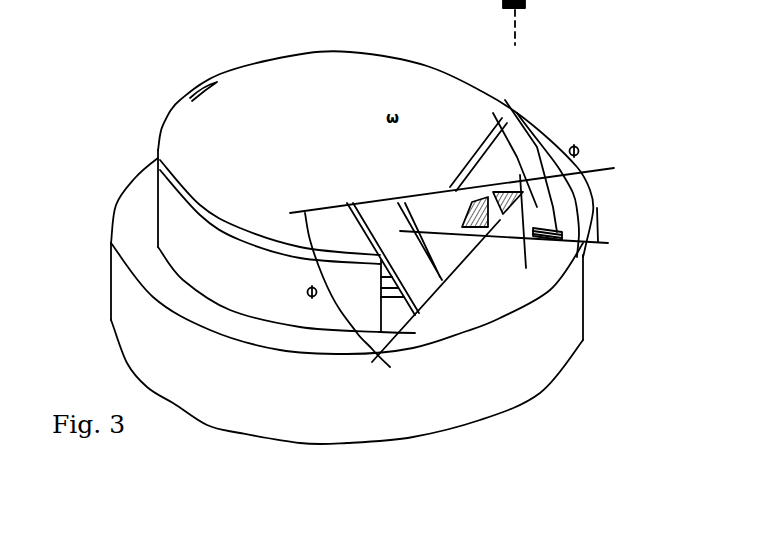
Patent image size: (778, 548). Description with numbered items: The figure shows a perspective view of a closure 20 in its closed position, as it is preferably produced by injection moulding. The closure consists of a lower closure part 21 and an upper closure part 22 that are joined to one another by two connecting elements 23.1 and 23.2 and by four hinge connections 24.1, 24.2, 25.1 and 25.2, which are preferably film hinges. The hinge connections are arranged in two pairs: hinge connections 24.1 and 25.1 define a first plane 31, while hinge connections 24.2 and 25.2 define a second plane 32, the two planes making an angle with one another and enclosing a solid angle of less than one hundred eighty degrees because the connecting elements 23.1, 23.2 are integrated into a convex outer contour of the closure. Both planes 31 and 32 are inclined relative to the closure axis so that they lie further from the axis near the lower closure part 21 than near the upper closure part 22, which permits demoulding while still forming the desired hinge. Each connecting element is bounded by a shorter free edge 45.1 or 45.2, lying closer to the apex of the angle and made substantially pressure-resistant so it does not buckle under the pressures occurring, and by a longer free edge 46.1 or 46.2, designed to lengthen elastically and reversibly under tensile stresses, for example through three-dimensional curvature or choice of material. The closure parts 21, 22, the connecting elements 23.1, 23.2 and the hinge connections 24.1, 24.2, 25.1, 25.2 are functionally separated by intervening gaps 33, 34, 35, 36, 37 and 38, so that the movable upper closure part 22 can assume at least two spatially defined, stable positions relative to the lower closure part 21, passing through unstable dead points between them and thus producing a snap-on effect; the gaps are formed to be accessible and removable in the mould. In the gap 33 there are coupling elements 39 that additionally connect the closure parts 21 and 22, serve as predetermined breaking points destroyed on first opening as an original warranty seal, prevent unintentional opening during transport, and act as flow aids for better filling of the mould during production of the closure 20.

The closure 20 is at (115, 56).
The lower closure part 21 is at (347, 301).
The upper closure part 22 is at (375, 192).
The first connecting element 23.1 is at (456, 278).
The second connecting element 23.2 is at (537, 207).
The first hinge connection 24.1 is at (428, 308).
The second hinge connection 24.2 is at (572, 242).
The third hinge connection 25.1 is at (380, 203).
The fourth hinge connection 25.2 is at (493, 125).
The first plane 31 is at (463, 217).
The second plane 32 is at (627, 168).
The gap 33 is at (287, 322).
The gap 34 is at (347, 203).
The gap 35 is at (427, 240).
The gap 36 is at (465, 195).
The gap 37 is at (475, 168).
The gap 38 is at (500, 118).
The coupling element 39 is at (153, 238).
The shorter free edge 45.1 is at (413, 267).
The shorter free edge 45.2 is at (536, 233).
The longer free edge 46.1 is at (383, 265).
The longer free edge 46.2 is at (593, 222).